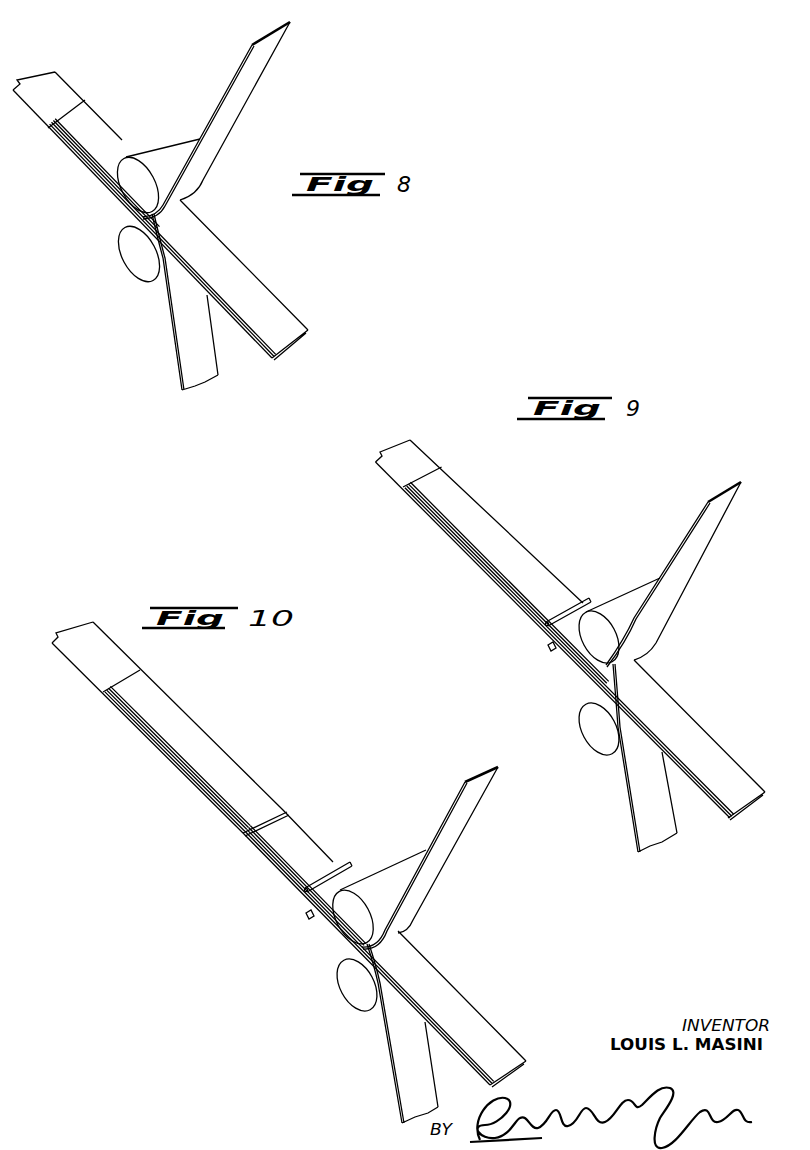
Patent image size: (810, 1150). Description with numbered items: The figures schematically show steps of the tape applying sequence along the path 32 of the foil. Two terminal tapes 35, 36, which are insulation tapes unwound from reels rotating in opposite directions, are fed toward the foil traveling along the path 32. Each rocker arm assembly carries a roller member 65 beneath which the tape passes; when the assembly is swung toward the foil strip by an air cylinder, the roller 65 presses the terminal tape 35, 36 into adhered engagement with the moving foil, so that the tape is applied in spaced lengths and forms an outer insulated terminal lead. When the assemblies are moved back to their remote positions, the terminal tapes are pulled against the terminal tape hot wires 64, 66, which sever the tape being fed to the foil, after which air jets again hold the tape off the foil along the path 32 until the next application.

In FIG. 8, the path 32 is at (217, 153).
In FIG. 9, the path 32 is at (725, 746).
In FIG. 10, the path 32 is at (501, 1033).
In FIG. 8, the terminal tape 35 is at (268, 68).
In FIG. 9, the terminal tape 35 is at (686, 592).
In FIG. 10, the terminal tape 35 is at (436, 880).
In FIG. 8, the terminal tape 36 is at (177, 352).
In FIG. 9, the terminal tape 36 is at (627, 797).
In FIG. 10, the terminal tape 36 is at (388, 1058).
In FIG. 9, the terminal tape hot wire 64 is at (590, 598).
In FIG. 10, the terminal tape hot wire 64 is at (350, 862).
In FIG. 8, the roller member 65 is at (162, 148).
In FIG. 9, the roller member 65 is at (631, 593).
In FIG. 10, the roller member 65 is at (384, 870).
In FIG. 9, the terminal tape hot wire 66 is at (548, 647).
In FIG. 10, the terminal tape hot wire 66 is at (306, 915).